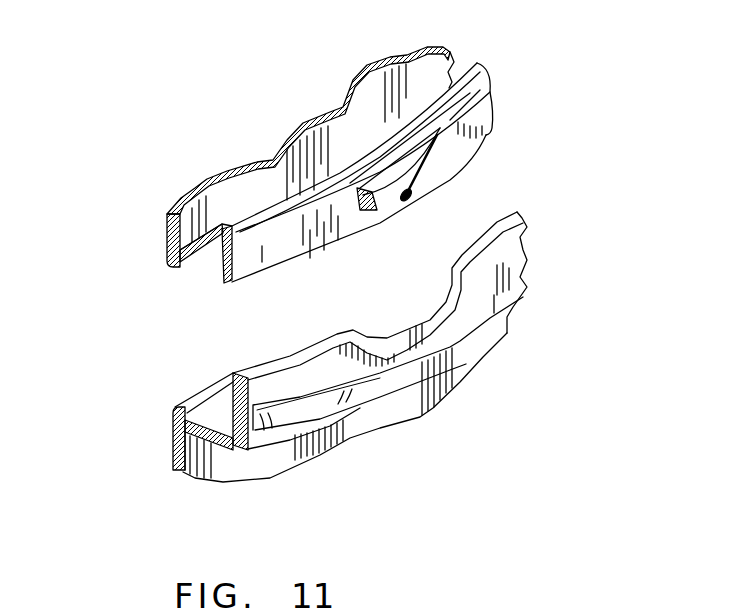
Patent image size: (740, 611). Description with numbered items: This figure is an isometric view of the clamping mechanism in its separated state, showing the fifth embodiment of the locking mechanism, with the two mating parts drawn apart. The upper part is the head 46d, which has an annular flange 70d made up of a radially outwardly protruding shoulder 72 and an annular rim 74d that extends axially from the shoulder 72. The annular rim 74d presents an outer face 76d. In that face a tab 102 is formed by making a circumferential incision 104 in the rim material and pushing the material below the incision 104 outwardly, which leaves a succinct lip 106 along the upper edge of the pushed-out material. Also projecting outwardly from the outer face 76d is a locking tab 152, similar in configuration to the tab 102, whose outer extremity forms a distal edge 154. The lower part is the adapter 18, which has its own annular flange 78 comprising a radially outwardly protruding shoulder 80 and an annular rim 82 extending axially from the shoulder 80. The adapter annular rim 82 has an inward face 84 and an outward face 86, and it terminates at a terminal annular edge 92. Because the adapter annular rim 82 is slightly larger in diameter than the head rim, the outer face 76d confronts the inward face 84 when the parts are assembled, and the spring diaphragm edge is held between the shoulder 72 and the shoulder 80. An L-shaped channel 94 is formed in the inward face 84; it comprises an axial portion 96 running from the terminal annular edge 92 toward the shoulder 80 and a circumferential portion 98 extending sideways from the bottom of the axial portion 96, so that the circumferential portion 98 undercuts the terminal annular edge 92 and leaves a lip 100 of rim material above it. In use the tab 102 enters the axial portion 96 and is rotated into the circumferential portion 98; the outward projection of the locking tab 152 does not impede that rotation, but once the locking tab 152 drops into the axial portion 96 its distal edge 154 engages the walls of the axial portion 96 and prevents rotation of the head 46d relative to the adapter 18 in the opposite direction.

The head 46d is at (150, 204).
The annular flange 70d is at (218, 223).
The shoulder 72 is at (186, 264).
The annular rim 74d is at (227, 285).
The outer face 76d is at (263, 260).
The circumferential incision 104 is at (390, 180).
The locking tab 152 is at (493, 104).
The distal edge 154 is at (495, 117).
The lip 106 is at (425, 153).
The tab 102 is at (413, 200).
The terminal annular edge 92 is at (500, 212).
The inward face 84 is at (465, 241).
The outward face 86 is at (496, 243).
The L-shaped channel 94 is at (469, 309).
The axial portion 96 is at (443, 353).
The circumferential portion 98 is at (330, 407).
The lip 100 is at (303, 392).
The annular rim 82 is at (222, 396).
The annular flange 78 is at (165, 406).
The adapter 18 is at (172, 436).
The shoulder 80 is at (217, 445).